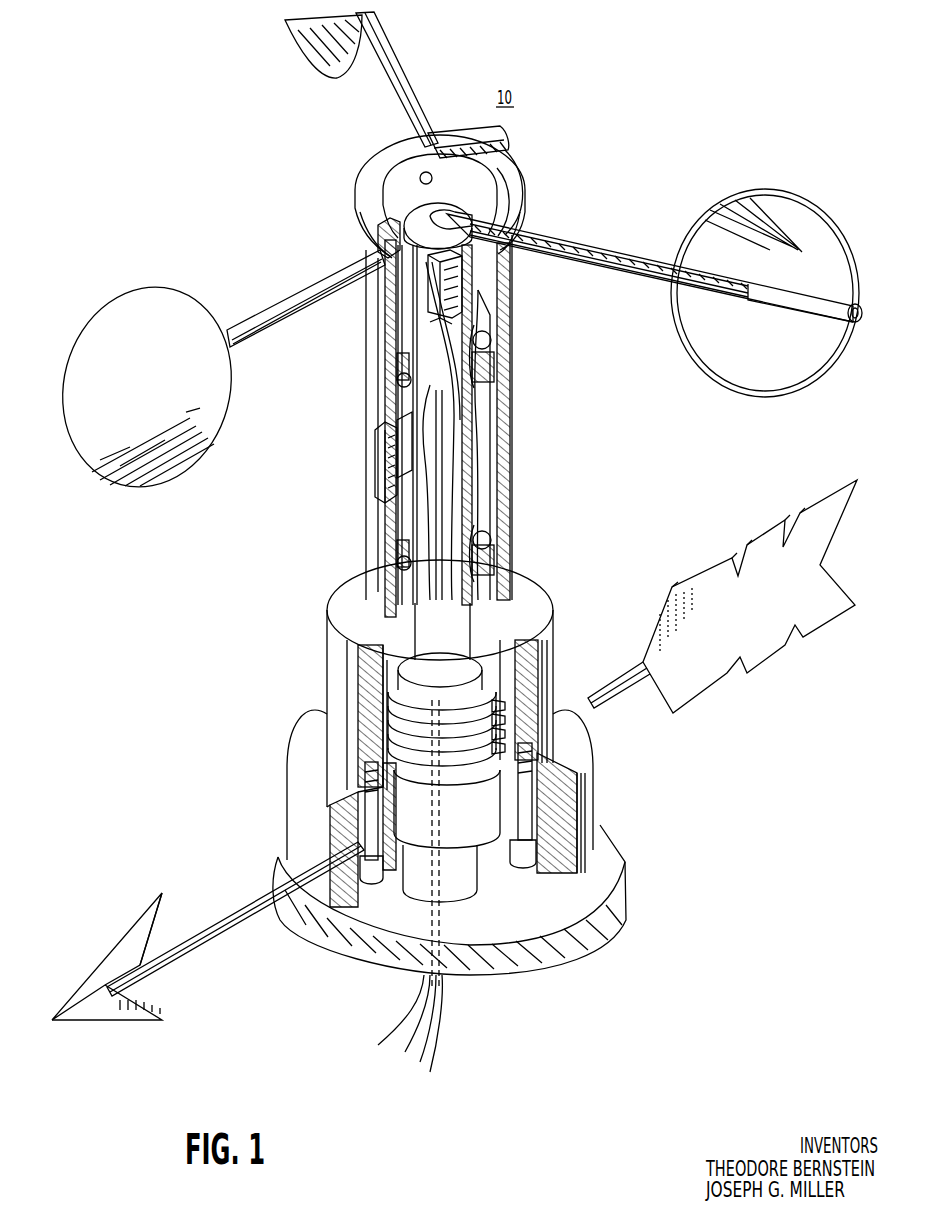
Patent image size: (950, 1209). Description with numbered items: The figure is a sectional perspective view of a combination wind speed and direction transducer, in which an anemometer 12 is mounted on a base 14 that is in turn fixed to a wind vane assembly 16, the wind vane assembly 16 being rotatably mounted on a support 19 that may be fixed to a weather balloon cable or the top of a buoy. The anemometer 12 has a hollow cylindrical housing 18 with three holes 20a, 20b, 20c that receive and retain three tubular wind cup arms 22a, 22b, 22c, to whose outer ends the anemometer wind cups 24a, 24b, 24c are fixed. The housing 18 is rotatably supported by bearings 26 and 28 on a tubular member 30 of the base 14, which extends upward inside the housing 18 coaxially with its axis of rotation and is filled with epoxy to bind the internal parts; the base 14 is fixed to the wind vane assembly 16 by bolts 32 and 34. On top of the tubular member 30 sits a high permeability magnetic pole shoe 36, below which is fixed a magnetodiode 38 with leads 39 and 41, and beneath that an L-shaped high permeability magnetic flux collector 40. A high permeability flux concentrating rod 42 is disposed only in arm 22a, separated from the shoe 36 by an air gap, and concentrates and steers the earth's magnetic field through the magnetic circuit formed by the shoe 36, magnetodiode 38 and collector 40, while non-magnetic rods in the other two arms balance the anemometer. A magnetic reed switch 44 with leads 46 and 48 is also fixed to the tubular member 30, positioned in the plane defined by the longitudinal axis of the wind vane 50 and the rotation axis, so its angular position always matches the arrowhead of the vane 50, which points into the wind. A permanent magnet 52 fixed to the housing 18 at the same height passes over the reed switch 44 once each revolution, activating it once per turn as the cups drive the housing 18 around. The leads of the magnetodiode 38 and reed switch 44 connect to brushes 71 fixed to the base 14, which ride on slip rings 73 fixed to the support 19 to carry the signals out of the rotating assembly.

The anemometer 12 is at (354, 187).
The base 14 is at (326, 615).
The wind vane assembly 16 is at (290, 726).
The hollow cylindrical housing 18 is at (366, 364).
The support 19 is at (605, 942).
The hole 20a is at (518, 228).
The hole 20b is at (378, 238).
The hole 20c is at (428, 172).
The tubular wind cup arm 22a is at (596, 240).
The tubular wind cup arm 22b is at (300, 292).
The tubular wind cup arm 22c is at (404, 88).
The anemometer wind cup 24a is at (735, 190).
The anemometer wind cup 24b is at (182, 457).
The anemometer wind cup 24c is at (318, 45).
The bearing 26 is at (493, 334).
The bearing 28 is at (490, 514).
The tubular member 30 is at (490, 442).
The bolt 32 is at (368, 882).
The bolt 34 is at (522, 868).
The magnetic pole shoe 36 is at (440, 222).
The magnetodiode 38 is at (470, 270).
The lead 39 is at (441, 431).
The L-shaped magnetic flux collector 40 is at (462, 282).
The lead 41 is at (441, 331).
The magnetic flux concentrating rod 42 is at (502, 200).
The magnetic reed switch 44 is at (400, 428).
The electrical lead 46 is at (425, 487).
The electrical lead 48 is at (428, 432).
The wind vane 50 is at (126, 952).
The permanent magnet 52 is at (378, 464).
The brushes 71 is at (470, 702).
The slip rings 73 is at (400, 707).